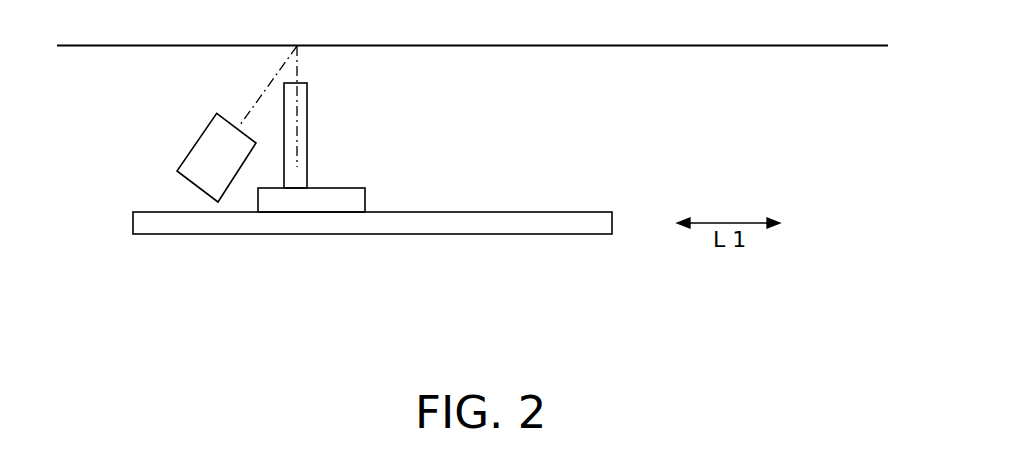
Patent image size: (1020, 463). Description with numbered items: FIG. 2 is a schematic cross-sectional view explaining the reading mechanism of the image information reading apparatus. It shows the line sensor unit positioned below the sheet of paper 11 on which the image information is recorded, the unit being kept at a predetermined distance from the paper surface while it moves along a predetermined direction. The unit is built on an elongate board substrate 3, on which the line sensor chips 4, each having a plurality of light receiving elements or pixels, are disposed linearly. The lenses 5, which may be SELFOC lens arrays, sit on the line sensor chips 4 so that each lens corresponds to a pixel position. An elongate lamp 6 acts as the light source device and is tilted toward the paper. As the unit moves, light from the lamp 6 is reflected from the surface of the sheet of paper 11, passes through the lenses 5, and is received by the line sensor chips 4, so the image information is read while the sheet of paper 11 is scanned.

The sheet of paper 11 is at (555, 46).
The board substrate 3 is at (450, 225).
The line sensor chips 4 is at (325, 203).
The lenses 5 is at (298, 138).
The lamp 6 is at (212, 150).